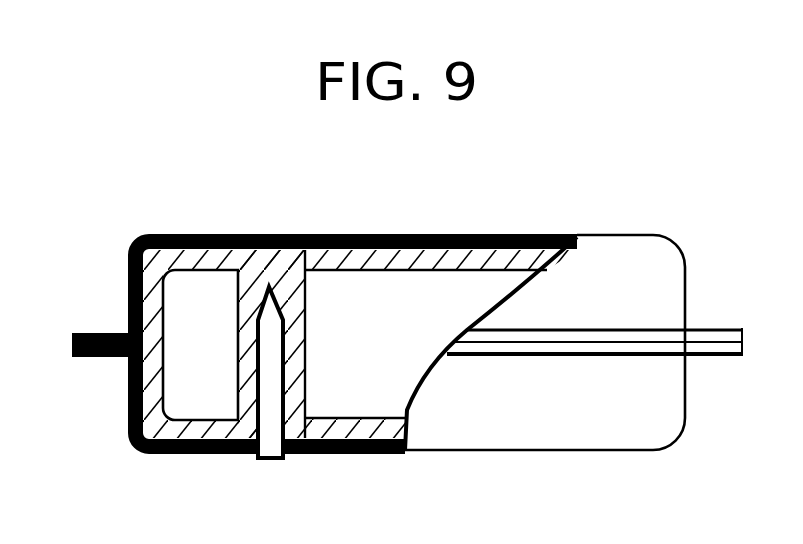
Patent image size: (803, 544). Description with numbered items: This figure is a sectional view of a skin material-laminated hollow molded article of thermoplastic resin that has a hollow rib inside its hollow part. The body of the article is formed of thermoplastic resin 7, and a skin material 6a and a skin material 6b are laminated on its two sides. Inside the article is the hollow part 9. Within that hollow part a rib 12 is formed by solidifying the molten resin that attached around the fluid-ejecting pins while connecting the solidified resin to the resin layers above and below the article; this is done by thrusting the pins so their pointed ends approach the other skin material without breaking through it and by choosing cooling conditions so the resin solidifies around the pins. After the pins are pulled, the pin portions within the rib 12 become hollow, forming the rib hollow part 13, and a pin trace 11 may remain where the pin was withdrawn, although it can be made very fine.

The skin material 6a is at (323, 456).
The skin material 6b is at (331, 234).
The thermoplastic resin 7 is at (426, 234).
The hollow part 9 is at (193, 402).
The pin trace 11 is at (274, 452).
The rib 12 is at (235, 297).
The rib hollow part 13 is at (270, 375).